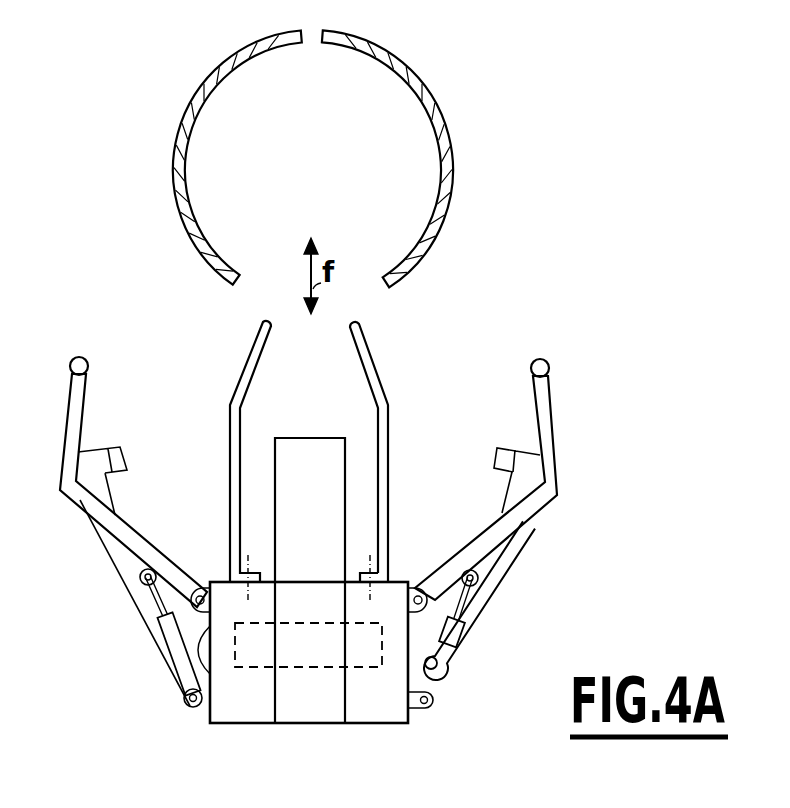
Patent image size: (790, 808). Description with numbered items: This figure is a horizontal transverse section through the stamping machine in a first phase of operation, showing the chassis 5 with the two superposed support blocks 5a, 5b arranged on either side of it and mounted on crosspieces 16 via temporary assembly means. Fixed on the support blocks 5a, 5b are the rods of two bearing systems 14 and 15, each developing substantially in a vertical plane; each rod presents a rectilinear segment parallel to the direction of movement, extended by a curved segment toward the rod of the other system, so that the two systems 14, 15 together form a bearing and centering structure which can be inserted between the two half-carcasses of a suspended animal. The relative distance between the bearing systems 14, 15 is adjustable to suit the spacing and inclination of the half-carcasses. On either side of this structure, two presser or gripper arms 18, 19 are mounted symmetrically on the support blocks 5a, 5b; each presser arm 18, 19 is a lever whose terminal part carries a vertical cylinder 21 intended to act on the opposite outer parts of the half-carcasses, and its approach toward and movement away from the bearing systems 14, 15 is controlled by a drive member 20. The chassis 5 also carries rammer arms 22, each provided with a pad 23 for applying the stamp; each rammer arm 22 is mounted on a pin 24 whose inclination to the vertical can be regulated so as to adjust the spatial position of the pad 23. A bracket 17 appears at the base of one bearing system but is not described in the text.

The chassis 5 is at (333, 686).
The support block 5a is at (388, 712).
The support block 5b is at (238, 708).
The bearing system 14 is at (373, 399).
The bearing system 15 is at (248, 378).
The crosspiece 16 is at (308, 660).
The prong mounting bracket 17 is at (377, 572).
The presser arm 18 is at (545, 417).
The presser arm 19 is at (72, 503).
The drive member 20 is at (170, 672).
The vertical cylinder 21 is at (455, 174).
The rammer arm 22 is at (172, 147).
The pad 23 is at (498, 452).
The pin 24 is at (437, 668).